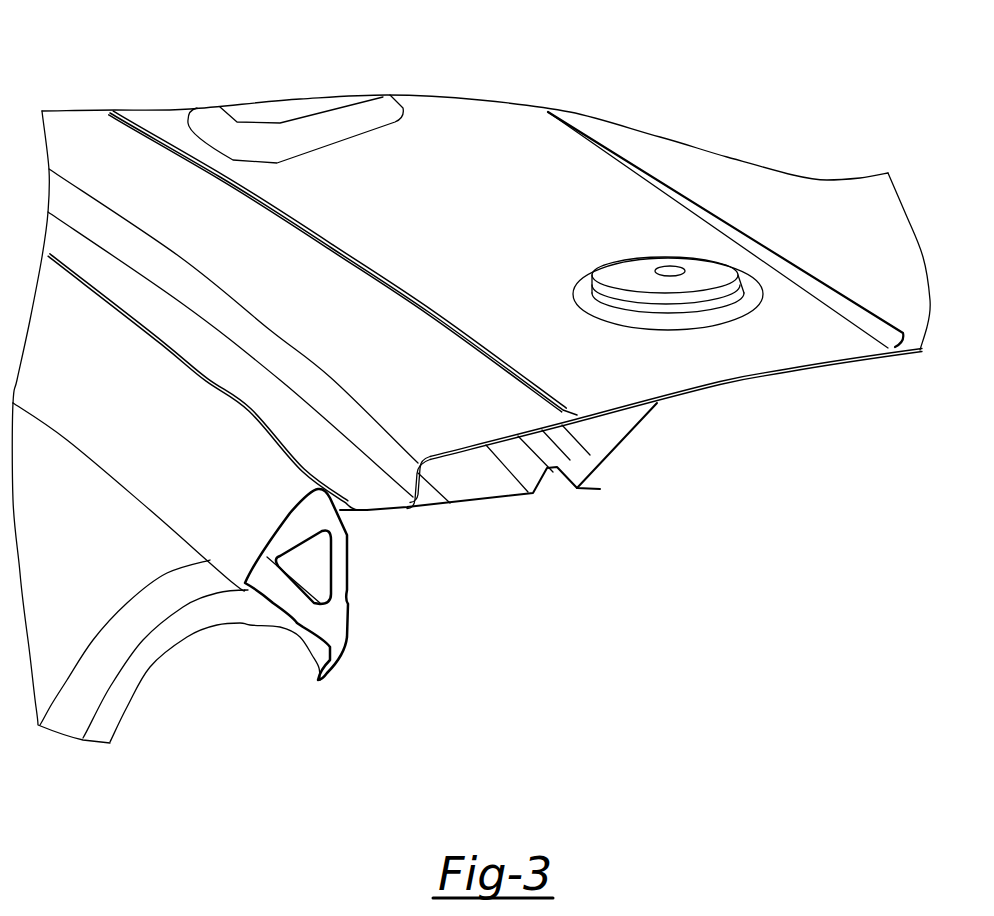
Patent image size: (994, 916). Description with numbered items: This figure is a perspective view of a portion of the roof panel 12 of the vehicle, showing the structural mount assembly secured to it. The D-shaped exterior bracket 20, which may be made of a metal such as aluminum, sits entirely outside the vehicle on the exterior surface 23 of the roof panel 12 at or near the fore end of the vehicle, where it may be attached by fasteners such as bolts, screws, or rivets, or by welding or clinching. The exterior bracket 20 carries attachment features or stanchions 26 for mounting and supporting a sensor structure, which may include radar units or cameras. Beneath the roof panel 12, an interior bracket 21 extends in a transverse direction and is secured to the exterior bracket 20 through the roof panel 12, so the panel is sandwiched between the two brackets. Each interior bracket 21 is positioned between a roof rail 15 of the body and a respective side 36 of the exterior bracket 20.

The roof panel 12 is at (827, 197).
The exterior bracket 20 is at (495, 163).
The exterior surface 23 is at (99, 172).
The side 36 is at (380, 240).
The stanchion 26 is at (642, 272).
The interior bracket 21 is at (633, 432).
The roof rail 15 is at (548, 460).